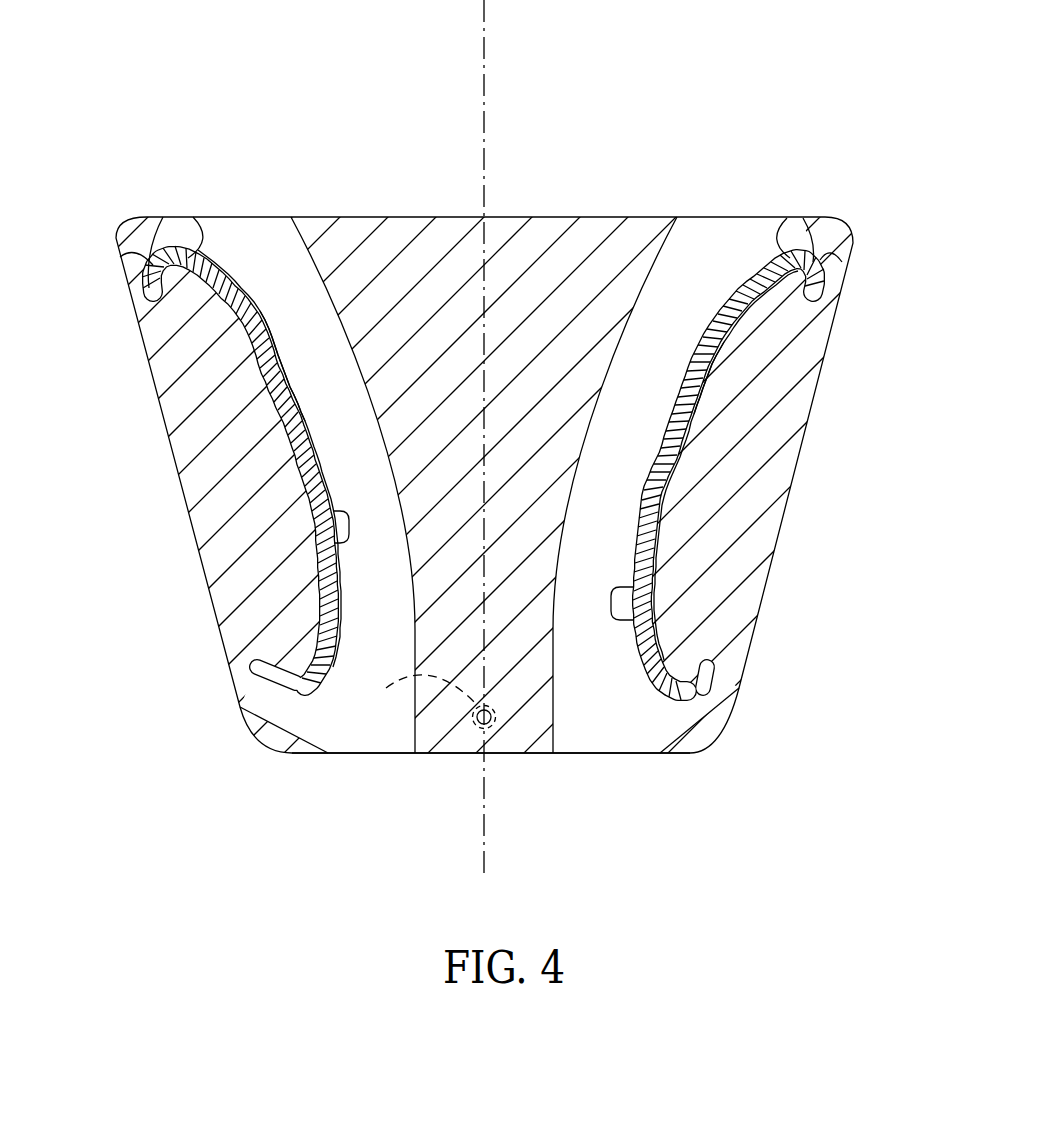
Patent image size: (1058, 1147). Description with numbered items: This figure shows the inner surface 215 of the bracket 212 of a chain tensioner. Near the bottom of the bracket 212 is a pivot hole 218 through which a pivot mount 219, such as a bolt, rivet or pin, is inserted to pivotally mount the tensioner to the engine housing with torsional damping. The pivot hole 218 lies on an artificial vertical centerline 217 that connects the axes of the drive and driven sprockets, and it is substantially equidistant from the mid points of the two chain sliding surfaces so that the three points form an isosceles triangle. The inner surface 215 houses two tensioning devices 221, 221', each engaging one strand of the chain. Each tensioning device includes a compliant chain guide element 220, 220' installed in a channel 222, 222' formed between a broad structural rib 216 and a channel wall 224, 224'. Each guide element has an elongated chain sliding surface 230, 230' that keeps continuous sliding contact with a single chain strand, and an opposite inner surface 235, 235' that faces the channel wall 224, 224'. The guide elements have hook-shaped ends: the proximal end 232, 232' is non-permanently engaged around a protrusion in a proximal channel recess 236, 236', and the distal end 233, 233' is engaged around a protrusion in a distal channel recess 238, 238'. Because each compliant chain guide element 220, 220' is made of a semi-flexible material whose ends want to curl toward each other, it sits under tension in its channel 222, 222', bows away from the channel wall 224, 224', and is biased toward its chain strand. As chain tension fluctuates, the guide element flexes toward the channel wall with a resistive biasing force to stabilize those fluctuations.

The bracket 212 is at (360, 218).
The inner surface 215 is at (543, 742).
The structural rib 216 is at (503, 232).
The artificial vertical centerline 217 is at (485, 68).
The pivot hole 218 is at (470, 724).
The pivot mount 219 is at (417, 677).
The compliant chain guide element 220 is at (215, 492).
The tensioning device 221 is at (199, 458).
The channel 222 is at (248, 189).
The channel wall 224 is at (209, 464).
The elongated chain sliding surface 230 is at (225, 529).
The proximal end 232 is at (315, 703).
The distal end 233 is at (161, 209).
The inner surface 235 is at (186, 385).
The proximal channel recess 236 is at (529, 475).
The distal channel recess 238 is at (95, 271).
The compliant chain guide element 220' is at (761, 487).
The tensioning device 221' is at (783, 465).
The channel 222' is at (748, 204).
The channel wall 224' is at (742, 475).
The elongated chain sliding surface 230' is at (731, 610).
The proximal end 232' is at (529, 475).
The distal end 233' is at (837, 211).
The inner surface 235' is at (797, 391).
The proximal channel recess 236' is at (767, 695).
The distal channel recess 238' is at (877, 264).